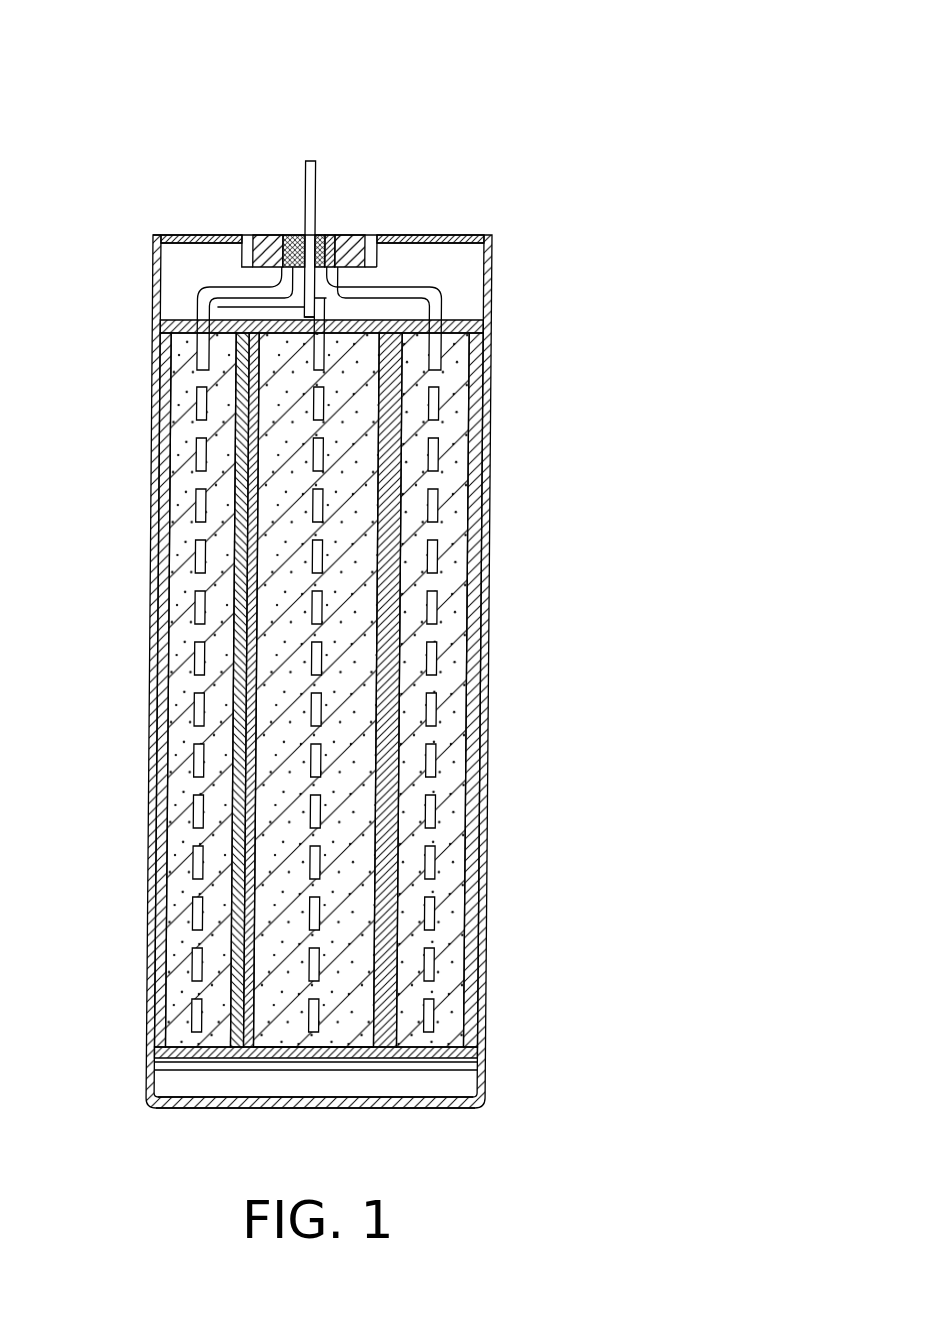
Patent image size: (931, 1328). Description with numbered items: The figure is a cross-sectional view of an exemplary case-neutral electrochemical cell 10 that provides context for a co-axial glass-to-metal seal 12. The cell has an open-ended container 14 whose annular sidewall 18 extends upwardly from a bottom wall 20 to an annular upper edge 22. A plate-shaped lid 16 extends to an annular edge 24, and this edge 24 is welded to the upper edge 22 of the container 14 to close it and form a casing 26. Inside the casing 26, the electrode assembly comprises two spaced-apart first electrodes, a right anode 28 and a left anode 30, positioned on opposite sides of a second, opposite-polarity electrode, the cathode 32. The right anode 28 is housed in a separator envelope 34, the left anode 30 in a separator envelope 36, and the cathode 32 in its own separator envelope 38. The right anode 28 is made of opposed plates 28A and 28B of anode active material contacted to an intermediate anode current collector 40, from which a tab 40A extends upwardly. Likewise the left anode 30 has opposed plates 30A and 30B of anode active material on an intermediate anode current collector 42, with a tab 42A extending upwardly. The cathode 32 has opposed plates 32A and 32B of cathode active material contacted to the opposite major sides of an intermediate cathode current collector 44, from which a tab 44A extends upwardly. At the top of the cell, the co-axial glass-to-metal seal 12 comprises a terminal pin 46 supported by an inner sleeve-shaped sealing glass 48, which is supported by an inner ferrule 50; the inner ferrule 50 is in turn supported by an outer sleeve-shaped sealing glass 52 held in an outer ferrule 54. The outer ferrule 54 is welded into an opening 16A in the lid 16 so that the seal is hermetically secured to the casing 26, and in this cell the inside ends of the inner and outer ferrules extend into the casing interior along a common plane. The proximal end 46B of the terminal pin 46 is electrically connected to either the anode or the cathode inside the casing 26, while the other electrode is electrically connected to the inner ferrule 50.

The case-neutral electrochemical cell 10 is at (364, 594).
The co-axial glass-to-metal seal 12 is at (395, 257).
The container 14 is at (485, 668).
The lid 16 is at (425, 236).
The opening 16A is at (392, 236).
The annular sidewall 18 is at (488, 908).
The bottom wall 20 is at (437, 1108).
The annular upper edge 22 is at (153, 237).
The annular edge 24 is at (170, 235).
The casing 26 is at (410, 252).
The right anode 28 is at (465, 545).
The plate of anode active material 28A is at (455, 400).
The plate of anode active material 28B is at (432, 360).
The left anode 30 is at (200, 1005).
The plate of anode active material 30A is at (225, 400).
The plate of anode active material 30B is at (200, 376).
The cathode 32 is at (268, 885).
The plate of cathode active material 32A is at (367, 1030).
The plate of cathode active material 32B is at (290, 1030).
The separator envelope 34 is at (397, 480).
The separator envelope 36 is at (245, 560).
The separator envelope 38 is at (240, 605).
The anode current collector 40 is at (437, 603).
The tab 40A is at (440, 297).
The anode current collector 42 is at (205, 505).
The tab 42A is at (200, 297).
The cathode current collector 44 is at (322, 823).
The tab 44A is at (315, 330).
The terminal pin 46 is at (316, 163).
The proximal end 46B is at (218, 307).
The inner sleeve-shaped sealing glass 48 is at (318, 236).
The inner ferrule 50 is at (340, 236).
The outer sleeve-shaped sealing glass 52 is at (265, 236).
The outer ferrule 54 is at (247, 236).